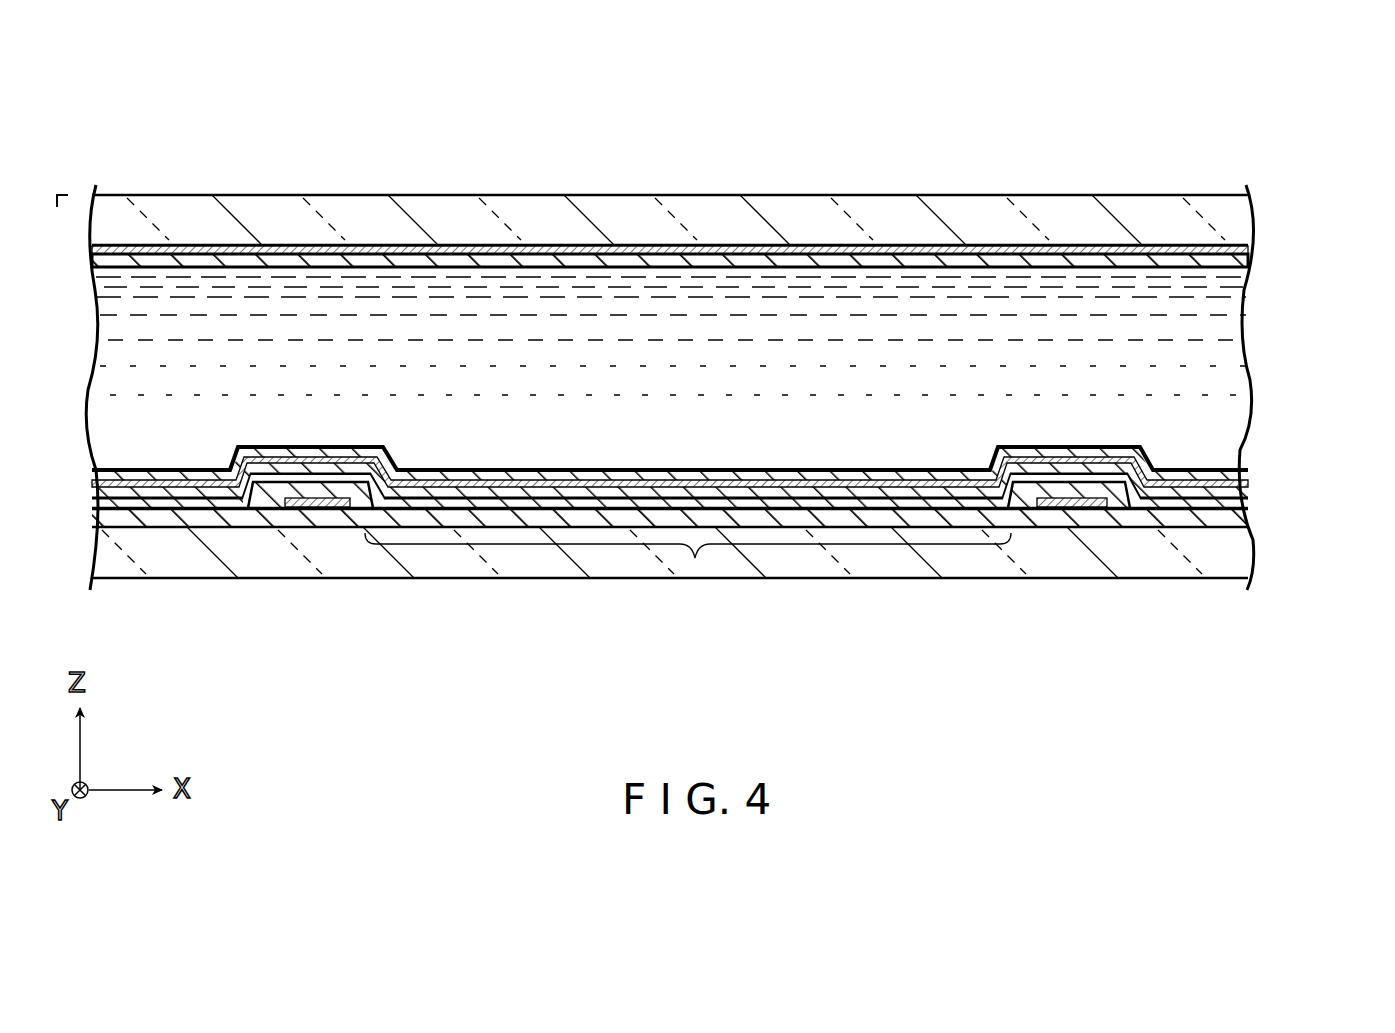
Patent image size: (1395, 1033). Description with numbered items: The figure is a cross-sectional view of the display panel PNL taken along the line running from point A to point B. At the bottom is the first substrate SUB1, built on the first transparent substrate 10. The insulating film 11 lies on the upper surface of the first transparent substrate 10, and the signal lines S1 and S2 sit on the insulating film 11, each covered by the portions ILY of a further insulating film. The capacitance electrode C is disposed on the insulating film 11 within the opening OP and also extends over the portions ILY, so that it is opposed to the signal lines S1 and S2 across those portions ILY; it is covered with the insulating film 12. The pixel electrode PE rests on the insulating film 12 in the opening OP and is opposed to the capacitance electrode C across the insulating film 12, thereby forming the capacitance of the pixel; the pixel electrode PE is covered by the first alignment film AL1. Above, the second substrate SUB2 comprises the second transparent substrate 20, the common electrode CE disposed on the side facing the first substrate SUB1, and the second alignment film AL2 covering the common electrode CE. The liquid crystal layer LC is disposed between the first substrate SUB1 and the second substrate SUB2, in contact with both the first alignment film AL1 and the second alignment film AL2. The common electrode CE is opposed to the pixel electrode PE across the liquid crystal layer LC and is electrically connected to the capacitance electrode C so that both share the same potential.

The display panel PNL is at (1165, 190).
The second substrate SUB2 is at (743, 193).
The second transparent substrate 20 is at (198, 213).
The common electrode CE is at (1250, 249).
The second alignment film AL2 is at (1212, 262).
The liquid crystal layer LC is at (1240, 356).
The first alignment film AL1 is at (1227, 468).
The pixel electrode PE is at (128, 478).
The insulating film 12 is at (1243, 492).
The capacitance electrode C is at (1243, 505).
The insulating film 11 is at (1247, 517).
The first substrate SUB1 is at (743, 584).
The first transparent substrate 10 is at (181, 568).
The signal line S1 is at (302, 512).
The signal line S2 is at (1040, 512).
The portions of the insulating film ILY is at (322, 510).
The opening OP is at (695, 558).
The line A-B end point A is at (94, 611).
The line A-B end point B is at (1248, 609).